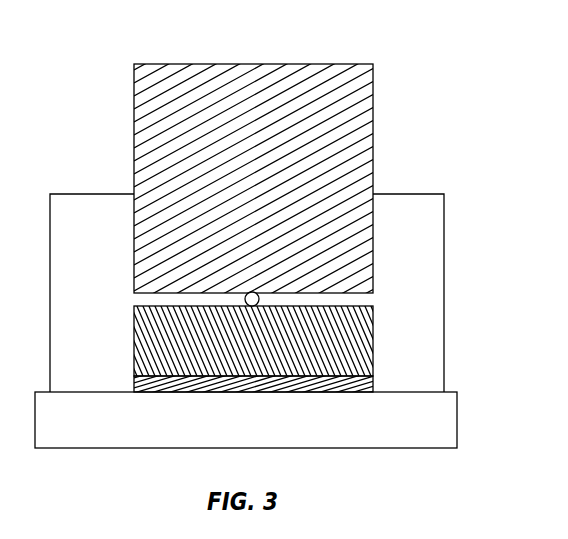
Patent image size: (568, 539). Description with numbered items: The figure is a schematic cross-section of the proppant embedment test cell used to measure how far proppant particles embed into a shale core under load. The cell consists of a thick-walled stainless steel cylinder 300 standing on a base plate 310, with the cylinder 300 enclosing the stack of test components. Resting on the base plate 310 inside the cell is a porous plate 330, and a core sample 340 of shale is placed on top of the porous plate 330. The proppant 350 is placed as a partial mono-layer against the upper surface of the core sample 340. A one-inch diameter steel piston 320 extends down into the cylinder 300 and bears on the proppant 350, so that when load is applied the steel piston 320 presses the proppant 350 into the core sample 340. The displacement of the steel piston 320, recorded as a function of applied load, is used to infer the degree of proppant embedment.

The stainless steel cylinder 300 is at (85, 194).
The base plate 310 is at (458, 415).
The steel piston 320 is at (182, 64).
The porous plate 330 is at (168, 393).
The core sample 340 is at (134, 325).
The proppant 350 is at (259, 299).